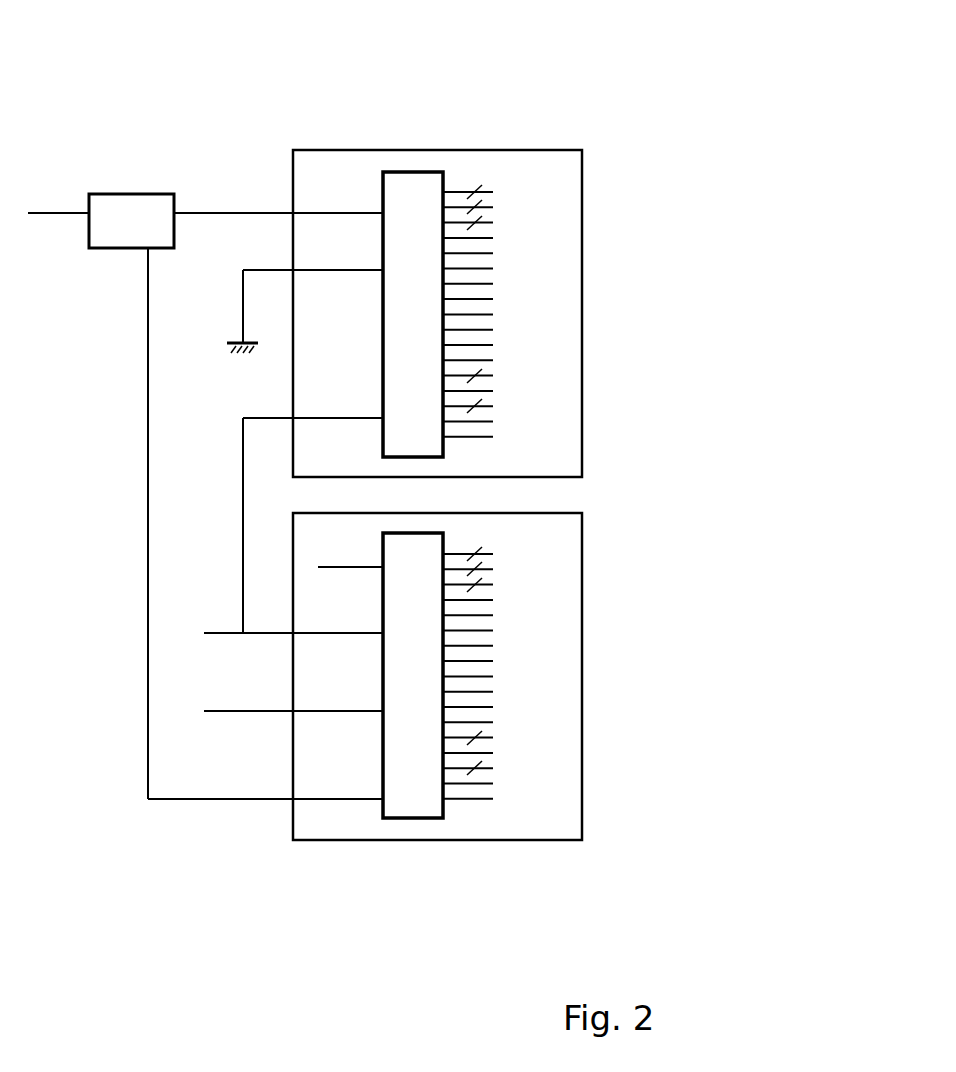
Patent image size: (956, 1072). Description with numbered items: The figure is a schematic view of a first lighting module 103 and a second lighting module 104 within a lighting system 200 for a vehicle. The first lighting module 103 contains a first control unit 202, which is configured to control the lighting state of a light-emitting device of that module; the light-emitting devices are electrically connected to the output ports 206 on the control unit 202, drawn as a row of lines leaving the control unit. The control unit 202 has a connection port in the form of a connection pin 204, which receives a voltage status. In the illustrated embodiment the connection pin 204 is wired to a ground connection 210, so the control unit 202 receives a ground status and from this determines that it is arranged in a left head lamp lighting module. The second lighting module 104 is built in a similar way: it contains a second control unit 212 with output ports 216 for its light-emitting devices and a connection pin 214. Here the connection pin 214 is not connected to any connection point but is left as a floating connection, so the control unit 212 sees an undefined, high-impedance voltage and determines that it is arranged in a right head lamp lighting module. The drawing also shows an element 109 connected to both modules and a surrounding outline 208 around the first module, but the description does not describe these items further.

The lighting system 200 is at (586, 101).
The control unit 109 is at (132, 194).
The housing of first lighting module 208 is at (293, 162).
The connection pin 204 is at (380, 270).
The first control unit 202 is at (414, 172).
The output ports 206 is at (516, 283).
The ground connection 210 is at (243, 340).
The first lighting module 103 is at (522, 283).
The connection pin 214 is at (332, 567).
The second control unit 212 is at (420, 772).
The output ports 216 is at (516, 585).
The second lighting module 104 is at (530, 704).